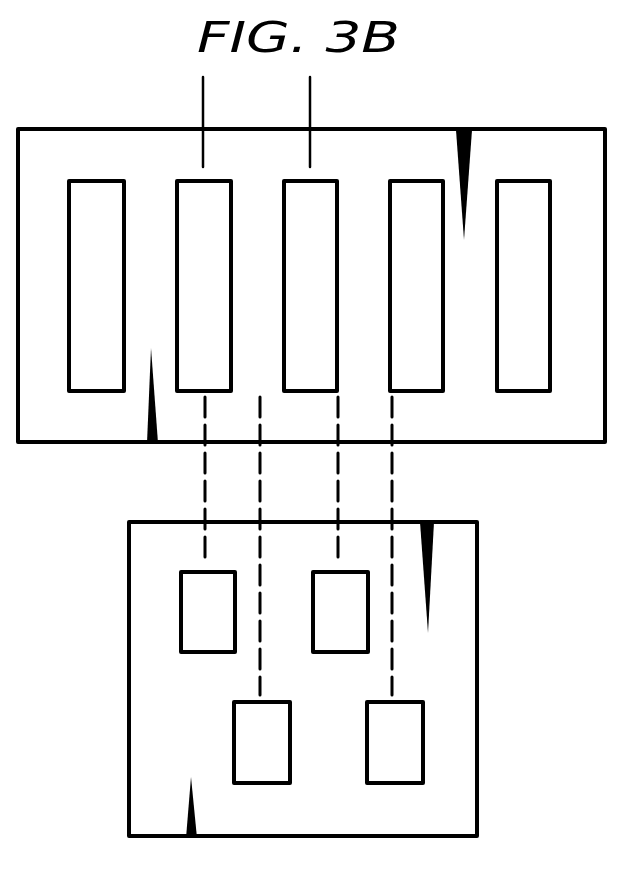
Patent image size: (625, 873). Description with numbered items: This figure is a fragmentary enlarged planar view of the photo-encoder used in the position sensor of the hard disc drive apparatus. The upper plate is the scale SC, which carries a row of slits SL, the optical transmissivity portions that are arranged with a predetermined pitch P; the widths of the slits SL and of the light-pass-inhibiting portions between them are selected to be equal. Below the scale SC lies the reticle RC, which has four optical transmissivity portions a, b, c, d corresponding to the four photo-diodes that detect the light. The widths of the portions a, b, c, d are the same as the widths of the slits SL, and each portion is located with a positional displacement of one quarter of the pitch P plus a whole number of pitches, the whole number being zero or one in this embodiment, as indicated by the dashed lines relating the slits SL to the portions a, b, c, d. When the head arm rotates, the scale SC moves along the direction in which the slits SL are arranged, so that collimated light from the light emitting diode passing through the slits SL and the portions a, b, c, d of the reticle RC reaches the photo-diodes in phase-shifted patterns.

The shadow mask / screen plate SC is at (381, 157).
The slit SL is at (73, 192).
The pitch P is at (310, 88).
The detection region / light receiving chip RC is at (477, 592).
The optical transmissivity portion a is at (181, 590).
The optical transmissivity portion b is at (335, 652).
The optical transmissivity portion c is at (234, 744).
The optical transmissivity portion d is at (421, 758).